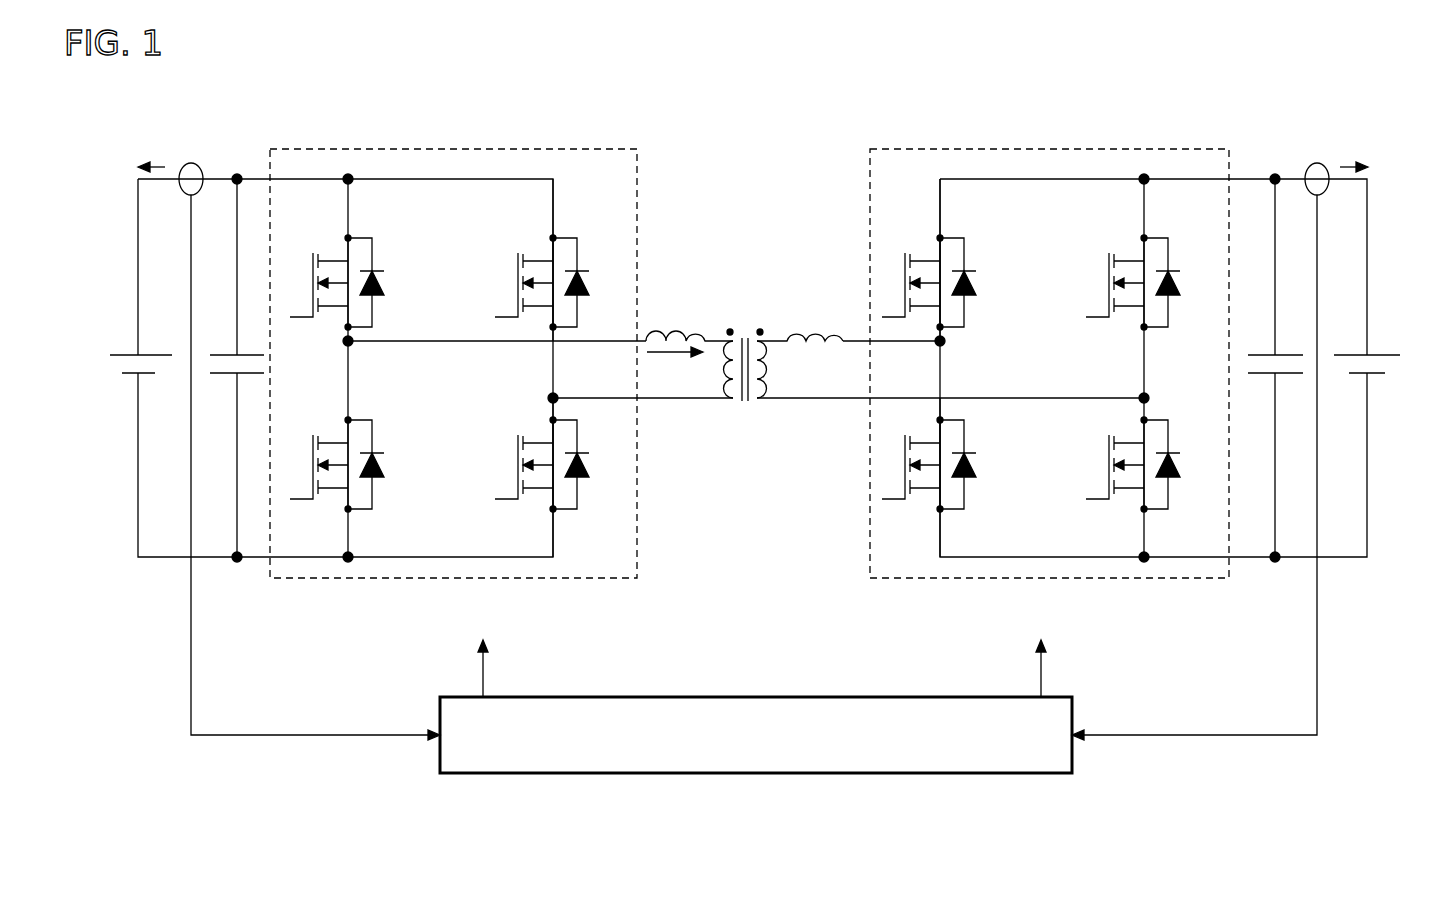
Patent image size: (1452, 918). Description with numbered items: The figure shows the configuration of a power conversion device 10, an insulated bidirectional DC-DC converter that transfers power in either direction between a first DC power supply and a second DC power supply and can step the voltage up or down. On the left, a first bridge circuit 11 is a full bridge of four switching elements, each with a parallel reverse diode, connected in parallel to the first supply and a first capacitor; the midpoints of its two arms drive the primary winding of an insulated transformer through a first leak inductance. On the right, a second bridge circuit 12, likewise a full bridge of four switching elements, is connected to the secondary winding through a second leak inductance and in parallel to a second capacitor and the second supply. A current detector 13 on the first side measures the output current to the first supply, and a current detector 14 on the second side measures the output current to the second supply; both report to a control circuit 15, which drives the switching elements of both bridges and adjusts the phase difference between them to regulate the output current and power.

The power conversion device 10 is at (748, 92).
The first bridge circuit 11 is at (457, 149).
The second bridge circuit 12 is at (984, 149).
The current detector 13 is at (190, 163).
The current detector 14 is at (1307, 163).
The control circuit 15 is at (730, 697).